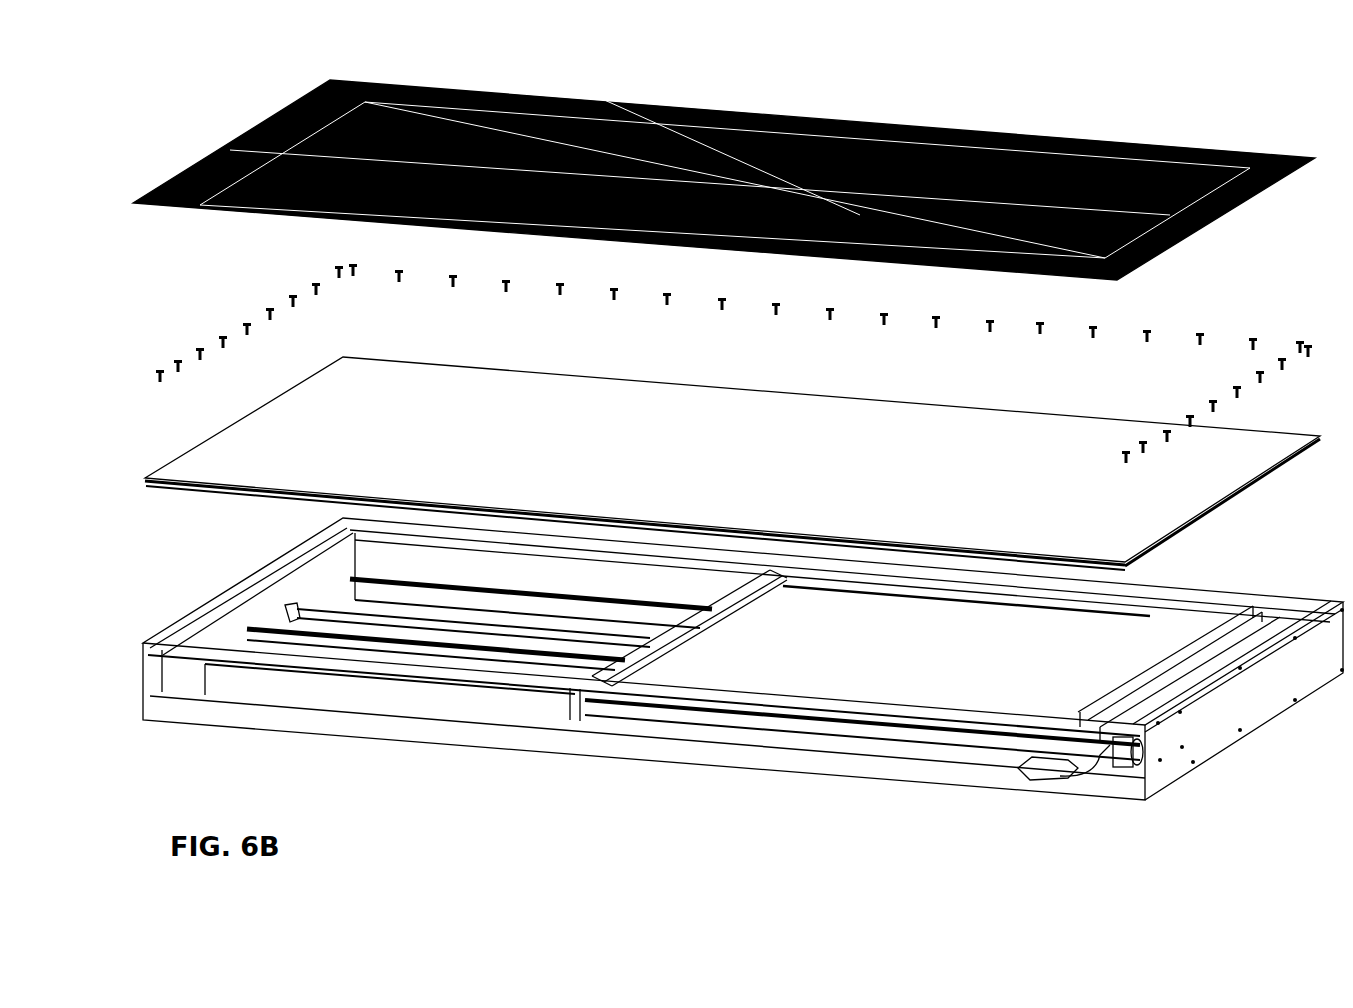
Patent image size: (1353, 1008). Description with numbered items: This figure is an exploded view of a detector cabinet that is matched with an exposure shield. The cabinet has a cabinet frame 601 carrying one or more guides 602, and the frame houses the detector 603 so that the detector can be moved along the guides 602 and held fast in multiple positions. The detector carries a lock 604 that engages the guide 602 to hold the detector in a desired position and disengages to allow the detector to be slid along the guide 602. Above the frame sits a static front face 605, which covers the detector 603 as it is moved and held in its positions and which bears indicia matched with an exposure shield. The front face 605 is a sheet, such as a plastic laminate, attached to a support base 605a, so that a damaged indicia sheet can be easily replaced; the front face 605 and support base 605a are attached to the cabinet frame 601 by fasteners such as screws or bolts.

The cabinet frame 601 is at (1220, 716).
The guides 602 is at (338, 623).
The detector 603 is at (765, 665).
The lock 604 is at (1035, 778).
The front face 605 is at (265, 122).
The support base 605a is at (170, 460).